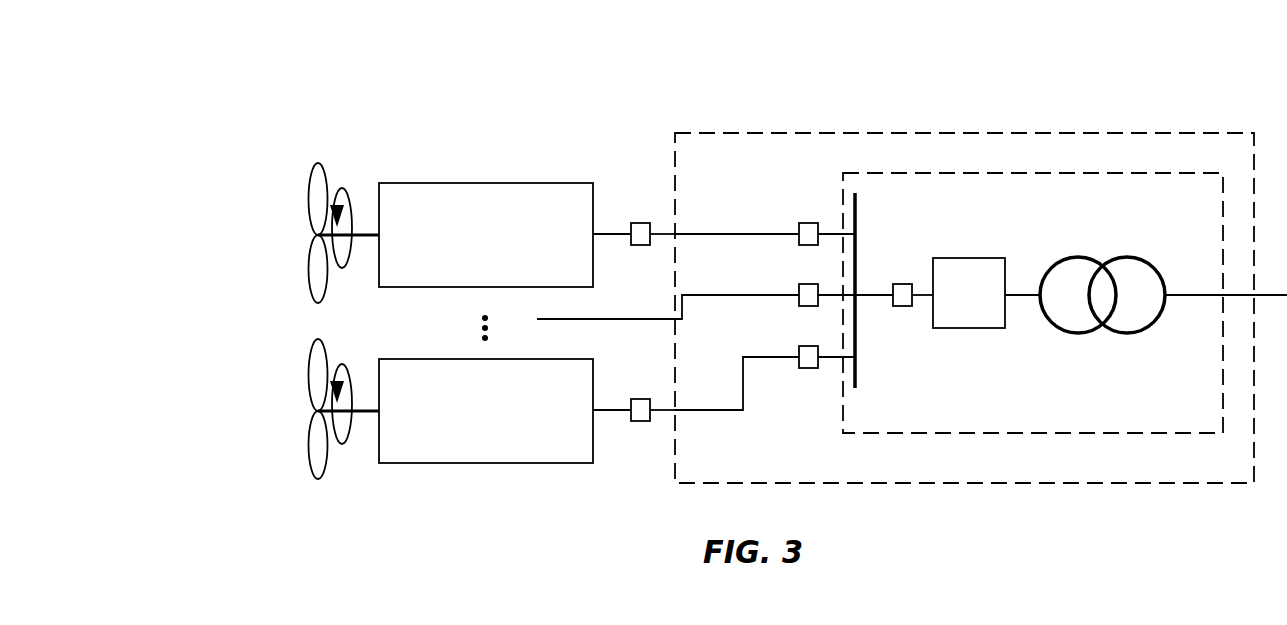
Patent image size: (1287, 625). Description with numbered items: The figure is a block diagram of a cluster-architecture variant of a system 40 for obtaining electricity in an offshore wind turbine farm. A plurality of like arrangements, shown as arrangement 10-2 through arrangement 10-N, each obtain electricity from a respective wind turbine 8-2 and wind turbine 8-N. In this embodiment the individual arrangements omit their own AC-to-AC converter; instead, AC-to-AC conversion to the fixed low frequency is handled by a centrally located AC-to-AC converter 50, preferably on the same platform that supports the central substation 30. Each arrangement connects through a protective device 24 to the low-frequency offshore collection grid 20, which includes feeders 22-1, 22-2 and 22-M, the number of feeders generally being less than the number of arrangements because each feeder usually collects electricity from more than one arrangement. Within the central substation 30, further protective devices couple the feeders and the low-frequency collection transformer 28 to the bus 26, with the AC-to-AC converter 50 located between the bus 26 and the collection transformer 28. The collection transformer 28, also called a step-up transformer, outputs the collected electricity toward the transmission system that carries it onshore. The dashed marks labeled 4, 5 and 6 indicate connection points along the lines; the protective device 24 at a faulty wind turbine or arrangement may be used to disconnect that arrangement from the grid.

The system 40 is at (484, 91).
The wind turbine 8-2 is at (318, 235).
The wind turbine 8-N is at (318, 411).
The arrangement 10-2 is at (510, 247).
The arrangement 10-N is at (515, 421).
The protective device 24 is at (637, 245).
The connection point 4 is at (752, 302).
The low-frequency offshore collection grid 20 is at (965, 474).
The central substation 30 is at (1033, 303).
The feeder 22-1 is at (690, 233).
The feeder 22-2 is at (705, 294).
The feeder 22-M is at (705, 409).
The bus 26 is at (857, 370).
The AC-to-AC converter 50 is at (983, 304).
The transformer low-voltage side connection 5 is at (1022, 276).
The low-frequency collection transformer 28 is at (1087, 333).
The transformer high-voltage side connection 6 is at (1226, 276).